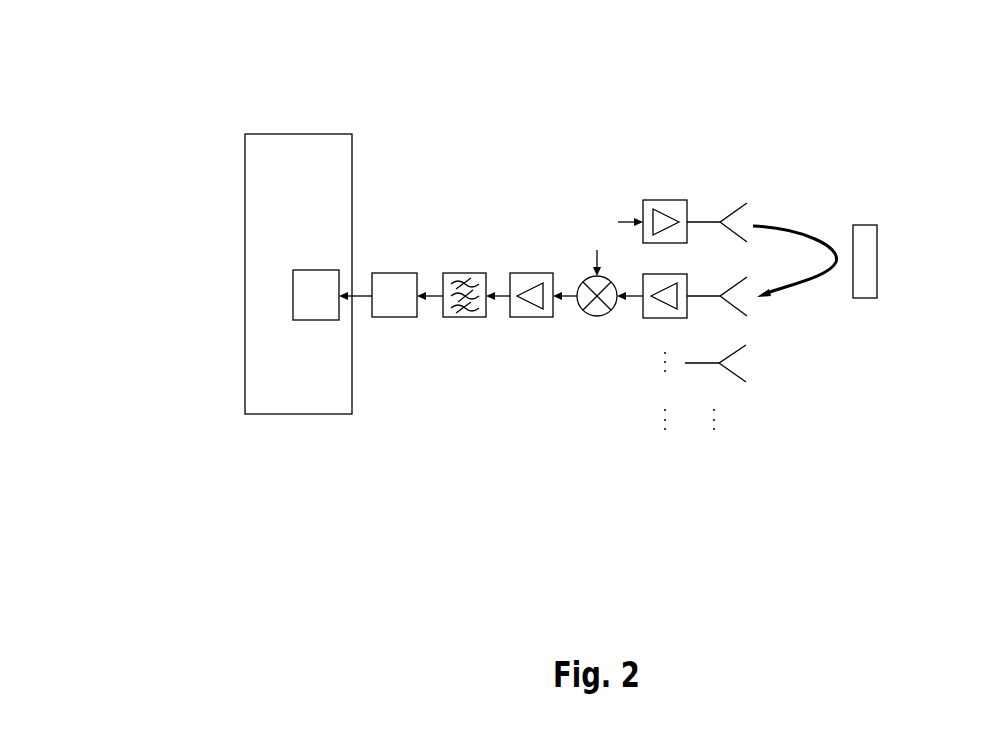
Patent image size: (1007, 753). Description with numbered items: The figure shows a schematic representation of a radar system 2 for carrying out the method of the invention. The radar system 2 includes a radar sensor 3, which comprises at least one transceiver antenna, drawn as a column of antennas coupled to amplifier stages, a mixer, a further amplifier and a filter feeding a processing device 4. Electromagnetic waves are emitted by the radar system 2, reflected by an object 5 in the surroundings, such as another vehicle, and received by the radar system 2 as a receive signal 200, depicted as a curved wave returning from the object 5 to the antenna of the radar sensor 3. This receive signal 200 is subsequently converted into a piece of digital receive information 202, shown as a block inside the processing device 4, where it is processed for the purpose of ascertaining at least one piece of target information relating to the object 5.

The radar system 2 is at (188, 84).
The radar sensor 3 is at (725, 180).
The processing device 4 is at (245, 282).
The object 5 is at (877, 272).
The receive signal 200 is at (790, 308).
The digital receive information 202 is at (328, 320).